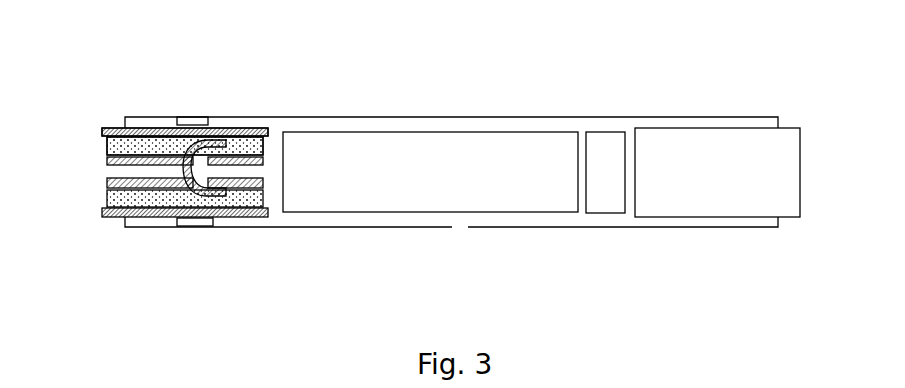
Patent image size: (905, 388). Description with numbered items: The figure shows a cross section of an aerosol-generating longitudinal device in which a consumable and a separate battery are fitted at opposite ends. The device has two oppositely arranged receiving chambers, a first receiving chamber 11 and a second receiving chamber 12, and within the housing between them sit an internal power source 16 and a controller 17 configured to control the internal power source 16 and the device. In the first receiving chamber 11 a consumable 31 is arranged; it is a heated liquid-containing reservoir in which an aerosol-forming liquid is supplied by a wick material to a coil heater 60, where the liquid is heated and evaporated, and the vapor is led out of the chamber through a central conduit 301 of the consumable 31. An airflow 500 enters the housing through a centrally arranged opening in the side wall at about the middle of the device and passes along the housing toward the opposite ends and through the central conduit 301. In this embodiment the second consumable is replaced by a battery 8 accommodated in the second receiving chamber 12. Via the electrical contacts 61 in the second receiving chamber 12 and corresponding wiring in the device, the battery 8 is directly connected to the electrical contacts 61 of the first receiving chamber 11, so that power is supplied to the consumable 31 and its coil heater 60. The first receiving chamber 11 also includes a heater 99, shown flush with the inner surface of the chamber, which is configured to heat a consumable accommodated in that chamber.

The first receiving chamber 11 is at (140, 128).
The consumable 31 is at (125, 128).
The central conduit 301 is at (150, 150).
The coil heater 60 is at (196, 165).
The electrical contacts 61 is at (270, 210).
The battery 8 is at (710, 167).
The second receiving chamber 12 is at (718, 127).
The internal power source 16 is at (345, 190).
The controller 17 is at (607, 197).
The heater 99 is at (198, 235).
The airflow 500 is at (102, 172).